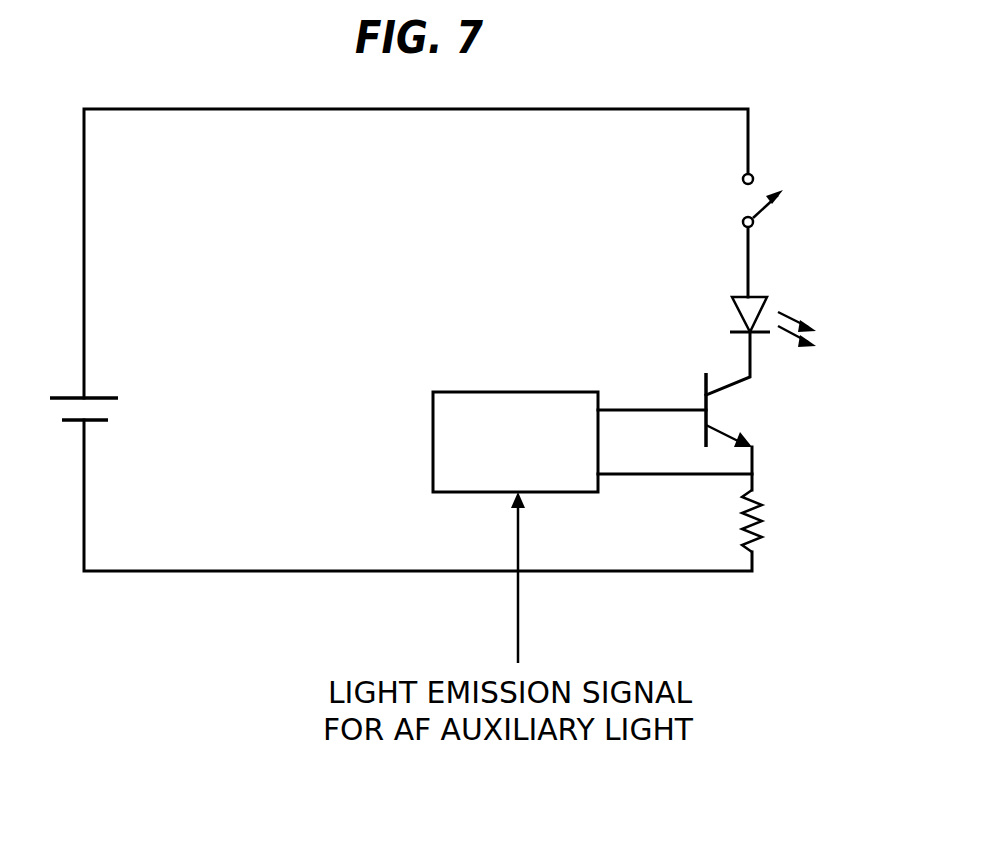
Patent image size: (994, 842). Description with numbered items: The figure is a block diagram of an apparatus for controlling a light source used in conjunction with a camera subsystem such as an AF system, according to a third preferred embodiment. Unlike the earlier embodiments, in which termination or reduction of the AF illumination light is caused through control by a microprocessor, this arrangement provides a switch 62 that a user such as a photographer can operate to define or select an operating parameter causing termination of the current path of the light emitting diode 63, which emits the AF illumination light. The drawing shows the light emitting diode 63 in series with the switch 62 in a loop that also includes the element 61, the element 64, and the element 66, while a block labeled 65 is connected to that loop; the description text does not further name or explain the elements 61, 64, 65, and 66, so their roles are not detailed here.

The battery 61 is at (115, 390).
The switch 62 is at (795, 200).
The light emitting diode 63 is at (725, 313).
The transistor 64 is at (762, 410).
The control circuit 65 is at (517, 391).
The resistor 66 is at (768, 520).